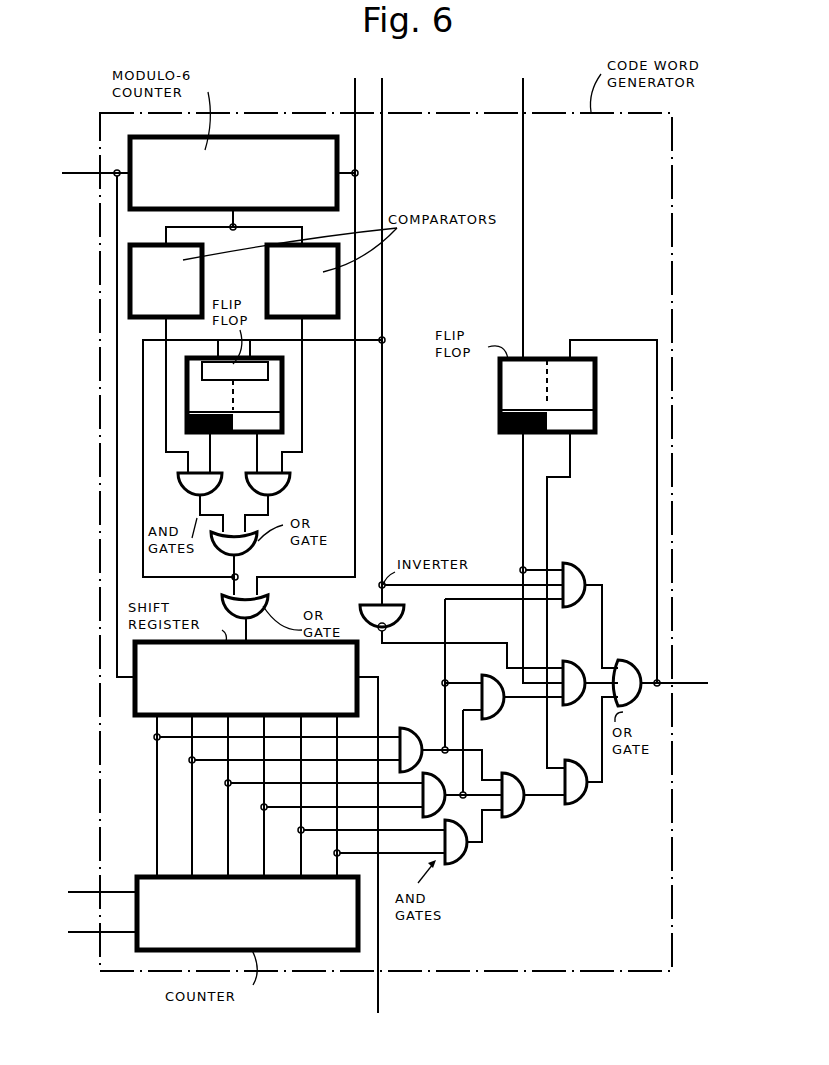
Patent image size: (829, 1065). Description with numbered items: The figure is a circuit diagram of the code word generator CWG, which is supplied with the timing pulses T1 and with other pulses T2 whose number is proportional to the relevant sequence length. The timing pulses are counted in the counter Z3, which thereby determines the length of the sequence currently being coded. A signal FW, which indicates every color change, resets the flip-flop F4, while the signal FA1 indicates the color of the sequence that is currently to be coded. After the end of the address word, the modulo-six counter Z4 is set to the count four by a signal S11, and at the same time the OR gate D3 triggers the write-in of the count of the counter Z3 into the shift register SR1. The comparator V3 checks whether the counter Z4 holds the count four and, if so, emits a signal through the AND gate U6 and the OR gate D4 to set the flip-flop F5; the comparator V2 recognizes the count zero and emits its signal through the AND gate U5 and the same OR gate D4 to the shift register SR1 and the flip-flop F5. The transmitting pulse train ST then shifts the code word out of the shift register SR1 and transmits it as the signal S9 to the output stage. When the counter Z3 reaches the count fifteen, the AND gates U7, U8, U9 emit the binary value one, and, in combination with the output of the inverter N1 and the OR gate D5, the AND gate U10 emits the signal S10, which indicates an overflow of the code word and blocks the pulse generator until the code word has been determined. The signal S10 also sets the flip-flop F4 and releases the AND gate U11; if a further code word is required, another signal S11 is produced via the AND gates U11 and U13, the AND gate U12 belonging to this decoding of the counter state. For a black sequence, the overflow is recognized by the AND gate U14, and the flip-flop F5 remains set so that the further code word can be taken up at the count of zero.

The code word generator CWG is at (535, 972).
The modulo-6 counter Z4 is at (244, 191).
The counter Z3 is at (247, 913).
The comparator V3 is at (166, 359).
The comparator V2 is at (302, 359).
The flip-flop F5 is at (283, 392).
The flip-flop F4 is at (597, 388).
The AND gate U6 is at (179, 489).
The AND gate U5 is at (292, 497).
The OR gate D4 is at (257, 548).
The OR gate D3 is at (268, 609).
The OR gate D5 is at (637, 667).
The shift register SR1 is at (290, 759).
The inverter N1 is at (404, 614).
The AND gate U14 is at (584, 572).
The AND gate U10 is at (587, 670).
The AND gate U9 is at (504, 686).
The AND gate U7 is at (405, 728).
The AND gate U8 is at (462, 763).
The AND gate U12 is at (460, 862).
The AND gate U13 is at (515, 817).
The AND gate U11 is at (590, 762).
The transmitting pulse train ST is at (86, 163).
The signal S11 is at (347, 82).
The signal FA1 is at (389, 82).
The signal FW is at (530, 82).
The signal S10 is at (698, 674).
The signal S9 is at (385, 990).
The timing pulses T1 is at (88, 885).
The pulses T2 is at (88, 927).